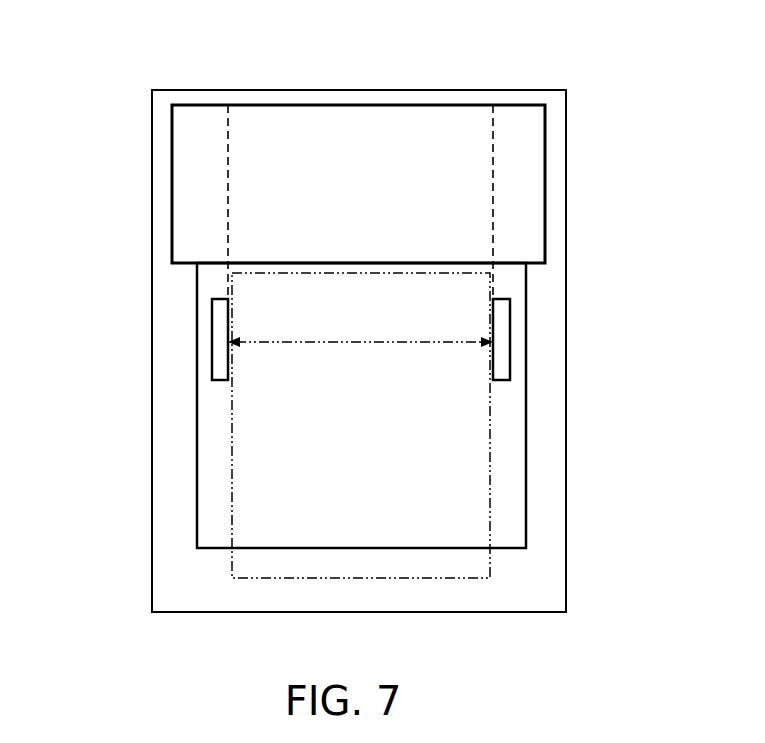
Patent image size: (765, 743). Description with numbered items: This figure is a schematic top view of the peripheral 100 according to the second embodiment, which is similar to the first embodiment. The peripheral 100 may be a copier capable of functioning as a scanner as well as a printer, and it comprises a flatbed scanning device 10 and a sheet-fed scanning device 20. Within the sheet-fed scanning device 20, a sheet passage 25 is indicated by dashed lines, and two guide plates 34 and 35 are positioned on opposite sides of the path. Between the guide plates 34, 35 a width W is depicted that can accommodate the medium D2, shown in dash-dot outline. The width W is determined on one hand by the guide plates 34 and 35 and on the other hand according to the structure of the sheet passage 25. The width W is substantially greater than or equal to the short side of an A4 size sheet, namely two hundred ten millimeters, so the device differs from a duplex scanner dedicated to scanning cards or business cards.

The peripheral 100 is at (346, 38).
The flatbed scanning device 10 is at (160, 364).
The sheet-fed scanning device 20 is at (185, 182).
The sheet passage 25 is at (493, 155).
The guide plate 34 is at (497, 340).
The guide plate 35 is at (215, 333).
The medium D2 is at (490, 478).
The width W is at (360, 326).